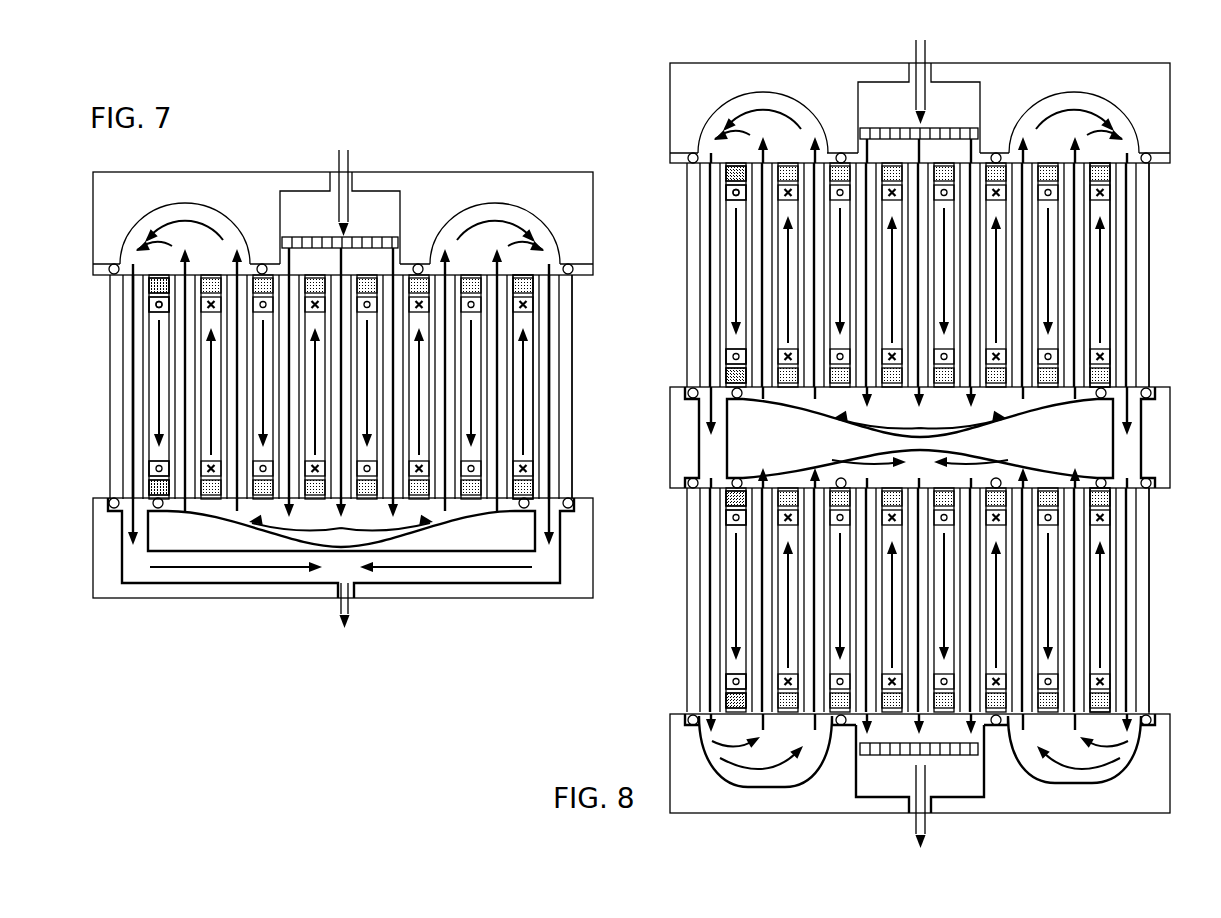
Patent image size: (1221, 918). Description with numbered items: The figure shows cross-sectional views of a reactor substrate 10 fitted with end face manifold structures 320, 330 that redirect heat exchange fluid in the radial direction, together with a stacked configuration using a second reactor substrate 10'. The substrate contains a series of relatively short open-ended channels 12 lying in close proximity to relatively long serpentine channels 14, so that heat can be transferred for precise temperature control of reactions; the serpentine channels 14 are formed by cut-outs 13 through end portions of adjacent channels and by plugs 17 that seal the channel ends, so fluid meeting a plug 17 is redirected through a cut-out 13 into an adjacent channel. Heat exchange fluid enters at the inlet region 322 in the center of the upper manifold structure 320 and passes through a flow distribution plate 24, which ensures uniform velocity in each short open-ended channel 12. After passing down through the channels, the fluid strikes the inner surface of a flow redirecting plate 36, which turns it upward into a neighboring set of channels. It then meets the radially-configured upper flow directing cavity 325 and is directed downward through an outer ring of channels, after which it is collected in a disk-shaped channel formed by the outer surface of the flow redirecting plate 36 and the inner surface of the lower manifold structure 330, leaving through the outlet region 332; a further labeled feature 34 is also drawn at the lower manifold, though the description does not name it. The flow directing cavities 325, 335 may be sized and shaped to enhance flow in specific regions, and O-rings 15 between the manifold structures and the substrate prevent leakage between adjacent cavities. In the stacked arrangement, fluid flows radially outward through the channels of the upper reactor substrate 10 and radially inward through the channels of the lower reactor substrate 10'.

In FIG. 7, the reactor substrate 10 is at (369, 387).
In FIG. 8, the reactor substrate 10 is at (947, 275).
In FIG. 8, the lower reactor substrate 10' is at (950, 600).
In FIG. 7, the relatively short open-ended channels 12 is at (552, 352).
In FIG. 8, the relatively short open-ended channels 12 is at (1130, 228).
In FIG. 7, the cut-outs 13 is at (150, 305).
In FIG. 8, the cut-outs 13 is at (728, 194).
In FIG. 7, the serpentine channels 14 is at (525, 427).
In FIG. 8, the serpentine channels 14 is at (1102, 318).
In FIG. 7, the O-rings 15 is at (112, 264).
In FIG. 8, the O-rings 15 is at (693, 153).
In FIG. 7, the plugs 17 is at (150, 285).
In FIG. 8, the plugs 17 is at (728, 173).
In FIG. 7, the flow distribution plate 24 is at (403, 232).
In FIG. 8, the flow distribution plate 24 is at (980, 126).
In FIG. 8, the outlet chamber 34 is at (862, 757).
In FIG. 7, the flow redirecting plate 36 is at (182, 542).
In FIG. 8, the flow redirecting plate 36 is at (770, 449).
In FIG. 7, the upper manifold structure 320 is at (579, 172).
In FIG. 8, the upper manifold structure 320 is at (1138, 63).
In FIG. 7, the inlet region 322 is at (325, 222).
In FIG. 8, the inlet region 322 is at (901, 112).
In FIG. 7, the radially-configured upper flow directing cavity 325 is at (222, 249).
In FIG. 8, the radially-configured upper flow directing cavity 325 is at (800, 139).
In FIG. 7, the lower manifold structure 330 is at (585, 600).
In FIG. 8, the lower manifold structure 330 is at (1150, 813).
In FIG. 7, the outlet region 332 is at (363, 572).
In FIG. 8, the outlet region 332 is at (980, 786).
In FIG. 7, the flow directing cavity 335 is at (360, 544).
In FIG. 8, the flow directing cavity 335 is at (793, 756).